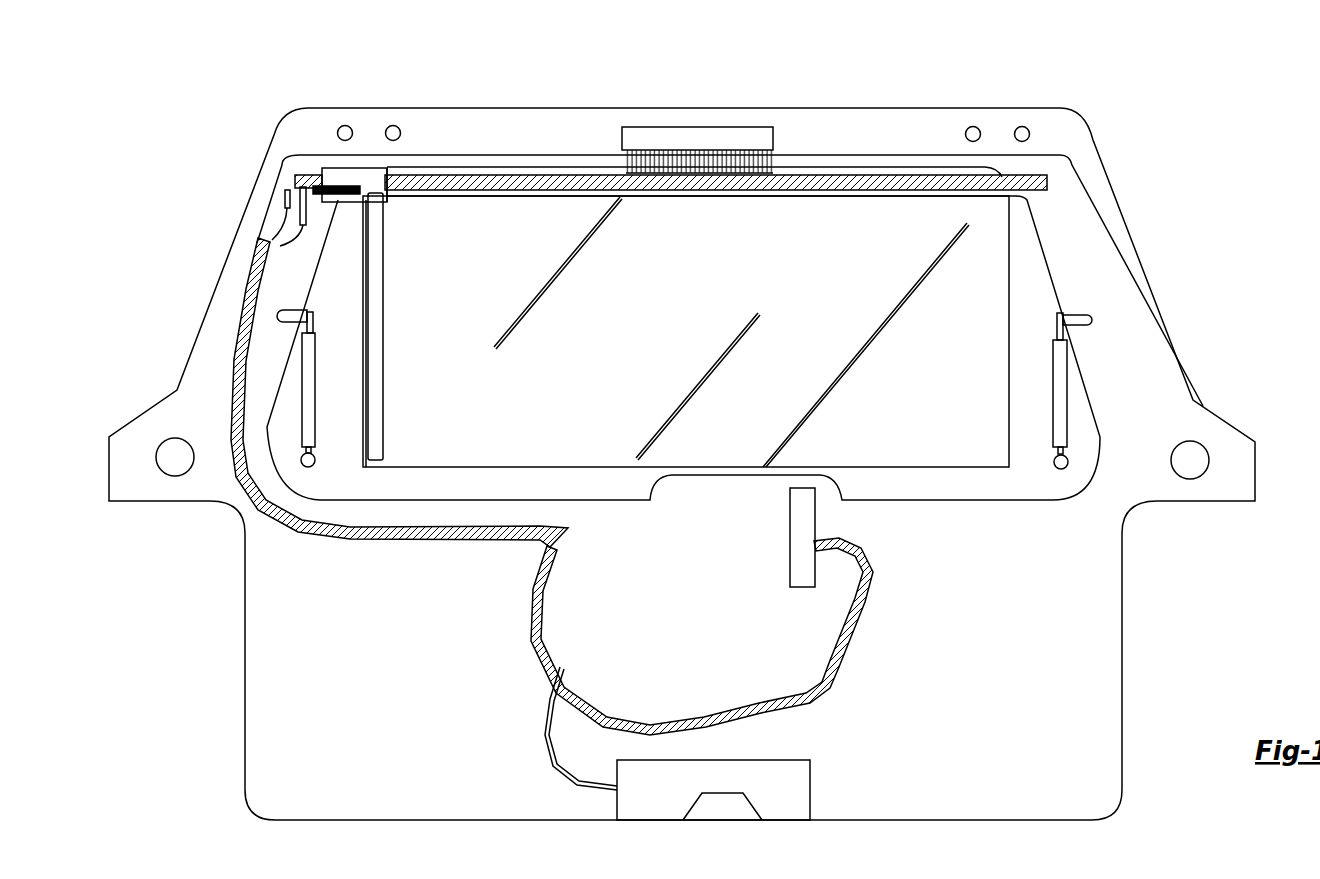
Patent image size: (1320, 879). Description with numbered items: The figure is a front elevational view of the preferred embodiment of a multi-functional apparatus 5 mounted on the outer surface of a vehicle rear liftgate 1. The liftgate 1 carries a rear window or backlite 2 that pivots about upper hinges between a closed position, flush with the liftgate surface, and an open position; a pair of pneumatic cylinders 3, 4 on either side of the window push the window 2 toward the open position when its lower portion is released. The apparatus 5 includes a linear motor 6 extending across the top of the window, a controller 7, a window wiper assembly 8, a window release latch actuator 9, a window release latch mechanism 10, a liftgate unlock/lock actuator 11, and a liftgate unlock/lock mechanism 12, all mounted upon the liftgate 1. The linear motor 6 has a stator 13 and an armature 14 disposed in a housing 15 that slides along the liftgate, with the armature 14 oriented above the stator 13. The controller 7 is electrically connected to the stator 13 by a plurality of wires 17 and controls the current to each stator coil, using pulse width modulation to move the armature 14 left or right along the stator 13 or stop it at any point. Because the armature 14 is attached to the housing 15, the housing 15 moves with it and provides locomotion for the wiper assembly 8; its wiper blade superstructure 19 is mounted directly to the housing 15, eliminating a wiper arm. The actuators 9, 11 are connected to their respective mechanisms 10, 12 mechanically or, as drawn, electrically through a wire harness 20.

The liftgate 1 is at (335, 704).
The rear window or backlite 2 is at (366, 300).
The pneumatic cylinder 3 is at (285, 334).
The pneumatic cylinder 4 is at (1098, 342).
The multi-functional apparatus 5 is at (450, 98).
The linear motor 6 is at (356, 157).
The controller 7 is at (708, 112).
The window wiper assembly 8 is at (398, 318).
The window release latch or lock actuator 9 is at (275, 201).
The window release latch or lock mechanism 10 is at (770, 562).
The liftgate unlock/lock actuator 11 is at (318, 215).
The liftgate unlock/lock mechanism 12 is at (643, 812).
The stator 13 is at (883, 183).
The armature 14 is at (313, 186).
The housing 15 is at (383, 183).
The wires 17 is at (773, 166).
The wiper blade superstructure 19 is at (380, 362).
The wire harness 20 is at (420, 548).